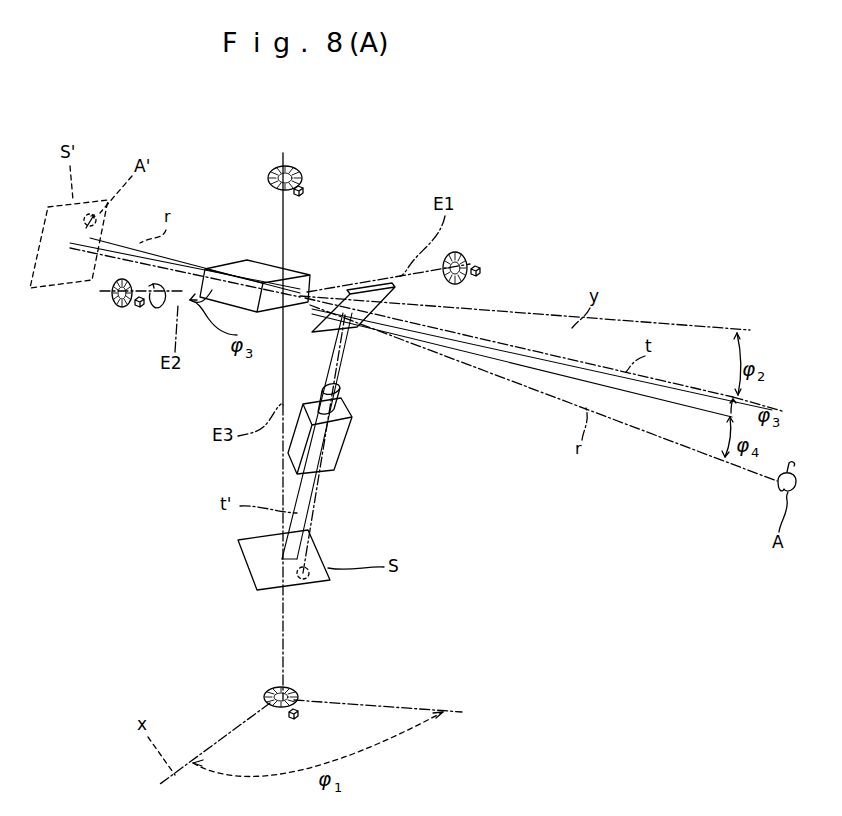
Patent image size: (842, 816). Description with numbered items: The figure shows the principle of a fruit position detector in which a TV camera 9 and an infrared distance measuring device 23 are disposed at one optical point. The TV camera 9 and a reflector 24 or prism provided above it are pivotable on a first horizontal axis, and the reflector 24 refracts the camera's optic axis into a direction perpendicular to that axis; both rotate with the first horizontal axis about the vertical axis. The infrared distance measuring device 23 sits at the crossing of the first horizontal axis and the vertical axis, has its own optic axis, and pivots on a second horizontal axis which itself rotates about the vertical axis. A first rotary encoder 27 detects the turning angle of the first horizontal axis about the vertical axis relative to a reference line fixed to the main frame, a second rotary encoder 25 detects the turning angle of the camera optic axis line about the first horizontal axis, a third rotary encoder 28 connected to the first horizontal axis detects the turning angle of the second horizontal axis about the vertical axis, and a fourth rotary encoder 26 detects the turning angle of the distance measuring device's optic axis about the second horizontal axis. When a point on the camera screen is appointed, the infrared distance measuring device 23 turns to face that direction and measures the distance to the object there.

The TV camera 9 is at (338, 445).
The infrared distance measuring device 23 is at (262, 258).
The reflector 24 is at (380, 288).
The second rotary encoder 25 is at (487, 256).
The fourth rotary encoder 26 is at (122, 316).
The first rotary encoder 27 is at (303, 683).
The third rotary encoder 28 is at (308, 185).